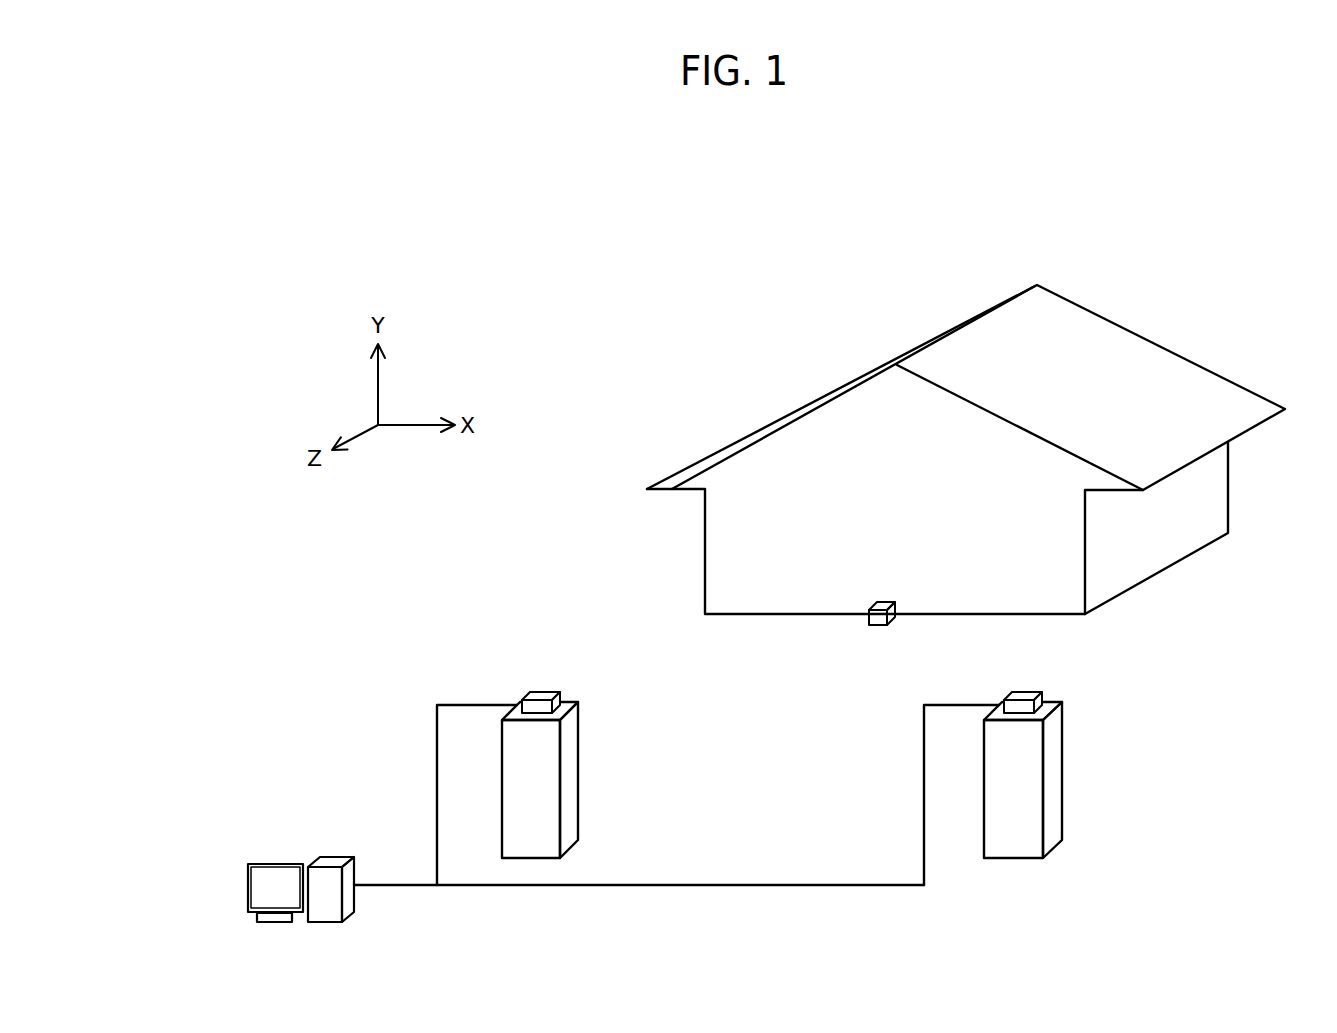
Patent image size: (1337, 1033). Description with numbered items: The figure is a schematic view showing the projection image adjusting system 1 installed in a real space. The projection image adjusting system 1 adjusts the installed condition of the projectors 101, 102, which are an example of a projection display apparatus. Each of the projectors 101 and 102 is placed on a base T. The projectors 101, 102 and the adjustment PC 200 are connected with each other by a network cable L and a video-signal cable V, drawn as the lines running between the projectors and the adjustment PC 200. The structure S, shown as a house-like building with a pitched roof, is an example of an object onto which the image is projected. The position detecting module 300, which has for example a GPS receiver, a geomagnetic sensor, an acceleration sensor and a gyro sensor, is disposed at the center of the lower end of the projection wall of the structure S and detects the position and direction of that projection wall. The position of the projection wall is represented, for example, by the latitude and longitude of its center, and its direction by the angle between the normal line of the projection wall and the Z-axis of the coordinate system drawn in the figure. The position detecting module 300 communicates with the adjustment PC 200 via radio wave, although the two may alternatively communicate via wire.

The projection image adjusting system 1 is at (375, 570).
The projector 101 is at (543, 690).
The projector 102 is at (1025, 690).
The adjustment PC 200 is at (309, 858).
The position detecting module 300 is at (874, 627).
The structure S is at (845, 462).
The base T is at (582, 740).
The network cable L is at (676, 795).
The video-signal cable V is at (783, 885).